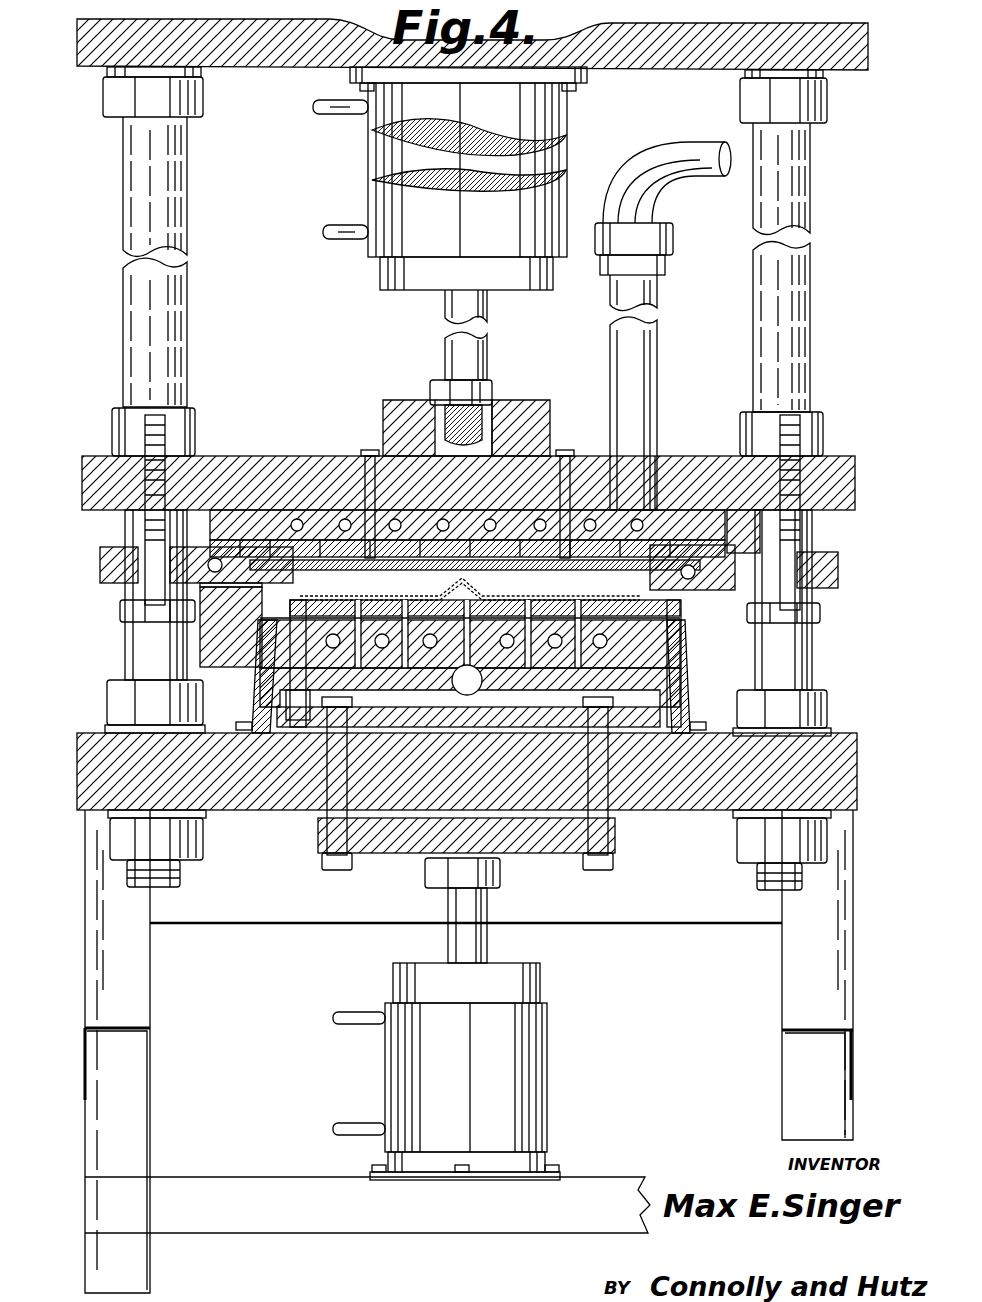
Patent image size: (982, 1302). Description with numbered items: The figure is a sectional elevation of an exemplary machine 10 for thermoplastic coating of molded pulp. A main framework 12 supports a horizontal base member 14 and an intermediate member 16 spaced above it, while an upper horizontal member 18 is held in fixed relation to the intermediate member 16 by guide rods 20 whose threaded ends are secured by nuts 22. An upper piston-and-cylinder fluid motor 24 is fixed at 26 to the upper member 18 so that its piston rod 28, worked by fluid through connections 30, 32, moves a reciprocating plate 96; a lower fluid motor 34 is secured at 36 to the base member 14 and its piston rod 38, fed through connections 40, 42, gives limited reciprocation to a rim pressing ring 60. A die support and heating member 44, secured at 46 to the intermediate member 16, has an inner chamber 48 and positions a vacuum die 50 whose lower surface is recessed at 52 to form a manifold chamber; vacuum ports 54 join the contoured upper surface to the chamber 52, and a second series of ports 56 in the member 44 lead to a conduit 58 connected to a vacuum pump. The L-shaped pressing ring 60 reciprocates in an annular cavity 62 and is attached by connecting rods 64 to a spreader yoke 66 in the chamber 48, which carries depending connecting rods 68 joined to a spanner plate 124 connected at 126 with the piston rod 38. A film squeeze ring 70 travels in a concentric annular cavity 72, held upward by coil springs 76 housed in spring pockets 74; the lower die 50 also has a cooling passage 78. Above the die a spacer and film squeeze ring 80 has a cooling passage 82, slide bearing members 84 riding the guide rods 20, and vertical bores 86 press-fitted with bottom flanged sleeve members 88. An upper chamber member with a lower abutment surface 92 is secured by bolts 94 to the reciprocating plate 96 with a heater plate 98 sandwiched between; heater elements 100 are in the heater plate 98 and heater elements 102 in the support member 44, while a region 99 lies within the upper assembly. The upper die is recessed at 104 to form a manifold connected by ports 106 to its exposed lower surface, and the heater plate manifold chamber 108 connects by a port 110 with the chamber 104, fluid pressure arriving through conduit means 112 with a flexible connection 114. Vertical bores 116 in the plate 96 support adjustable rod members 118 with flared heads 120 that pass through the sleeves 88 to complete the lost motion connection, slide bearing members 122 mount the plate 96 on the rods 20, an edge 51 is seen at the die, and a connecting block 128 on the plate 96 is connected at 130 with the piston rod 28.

The machine 10 is at (863, 306).
The main framework 12 is at (866, 1026).
The base member 14 is at (275, 1217).
The intermediate member 16 is at (840, 784).
The upper horizontal member 18 is at (862, 58).
The guide rods 20 is at (155, 202).
The nuts 22 is at (130, 95).
The fluid motor 24 is at (555, 134).
The securing point of upper motor 26 is at (583, 95).
The piston rod 28 is at (455, 305).
The fluid connection 30 is at (340, 116).
The fluid connection 32 is at (330, 226).
The fluid motor 34 is at (540, 1050).
The securing point of lower motor 36 is at (562, 1172).
The piston rod 38 is at (488, 937).
The fluid connection 40 is at (352, 1128).
The fluid connection 42 is at (336, 1027).
The die support and heating member 44 is at (705, 676).
The securing point of die support 46 is at (238, 724).
The inner chamber 48 is at (262, 694).
The vacuum die 50 is at (700, 642).
The seal edge 51 is at (710, 599).
The vacuum manifold chamber 52 is at (470, 590).
The vacuum ports 54 is at (382, 587).
The vacuum ports 56 is at (525, 670).
The conduit 58 is at (455, 682).
The rim pressing ring 60 is at (356, 587).
The annular cavity 62 is at (480, 591).
The connecting rods 64 is at (502, 663).
The spreader yoke 66 is at (385, 718).
The connecting rods 68 is at (332, 802).
The film squeeze ring 70 is at (577, 591).
The annular cavity 72 is at (700, 567).
The spring pockets 74 is at (201, 673).
The coil springs 76 is at (201, 652).
The cooling fluid passage 78 is at (690, 642).
The spacer and film squeeze ring 80 is at (838, 560).
The cooling fluid passage 82 is at (739, 535).
The slide bearing members 84 is at (130, 610).
The vertical bores 86 is at (800, 548).
The bottom flanged sleeve members 88 is at (108, 570).
The lower abutment surface 92 is at (735, 490).
The bolts 94 is at (366, 472).
The reciprocating plate 96 is at (250, 480).
The heater plate 98 is at (286, 524).
The upper die block 99 is at (691, 488).
The heater elements 100 is at (470, 506).
The heater elements 102 is at (605, 670).
The fluid manifold recess 104 is at (475, 575).
The ports 106 is at (499, 580).
The fluid manifold chamber 108 is at (416, 495).
The port 110 is at (463, 474).
The conduit means 112 is at (640, 362).
The flexible connection 114 is at (650, 184).
The vertical bores 116 is at (838, 480).
The adjustable rod members 118 is at (803, 542).
The flared heads 120 is at (800, 630).
The slide bearing members 122 is at (115, 430).
The spanner plate 124 is at (535, 857).
The connection to lower piston rod 126 is at (448, 872).
The connecting block 128 is at (540, 414).
The connection to upper piston rod 130 is at (480, 404).